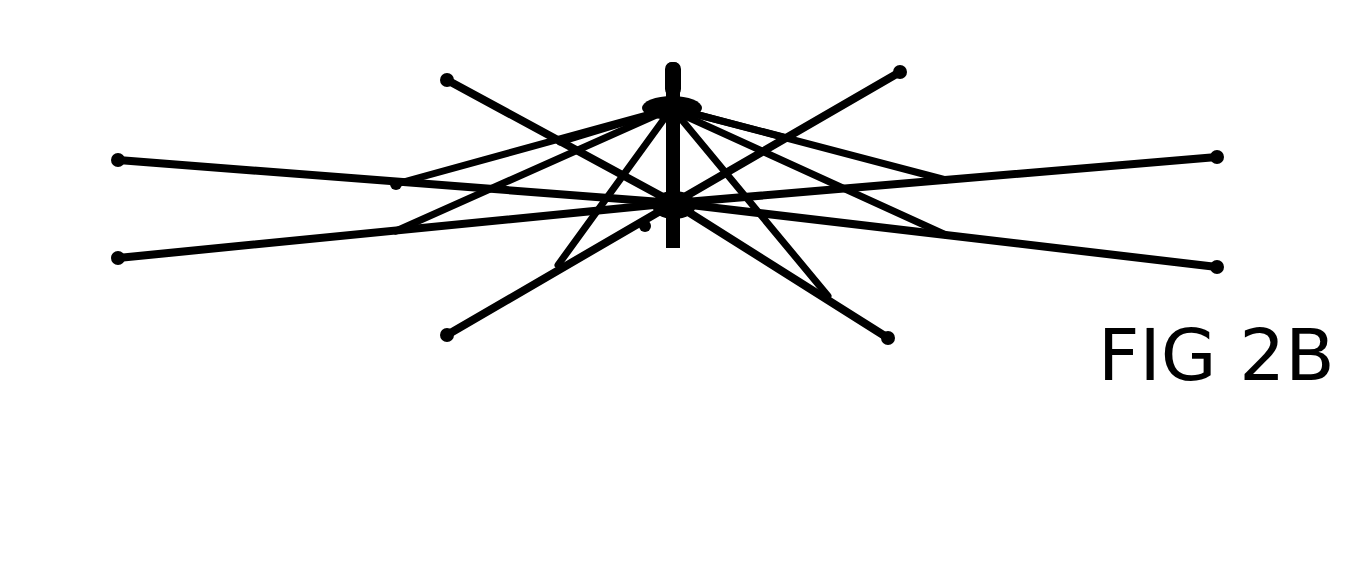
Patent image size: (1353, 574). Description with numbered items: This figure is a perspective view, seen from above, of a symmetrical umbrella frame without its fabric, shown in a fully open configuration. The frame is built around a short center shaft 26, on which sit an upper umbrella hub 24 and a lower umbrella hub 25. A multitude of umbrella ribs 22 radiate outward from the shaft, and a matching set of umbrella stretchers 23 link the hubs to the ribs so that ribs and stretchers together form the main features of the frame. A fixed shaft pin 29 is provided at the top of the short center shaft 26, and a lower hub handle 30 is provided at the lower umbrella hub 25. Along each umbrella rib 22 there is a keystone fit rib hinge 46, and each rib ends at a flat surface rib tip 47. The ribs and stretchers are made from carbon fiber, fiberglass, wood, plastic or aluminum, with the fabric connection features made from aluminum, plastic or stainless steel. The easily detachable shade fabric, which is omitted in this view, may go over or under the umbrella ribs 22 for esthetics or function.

The umbrella rib 22 is at (1013, 162).
The umbrella stretcher 23 is at (878, 150).
The upper umbrella hub 24 is at (697, 91).
The lower umbrella hub 25 is at (690, 240).
The short center shaft 26 is at (639, 236).
The fixed shaft pin 29 is at (658, 77).
The lower hub handle 30 is at (674, 252).
The keystone fit rib hinge 46 is at (390, 168).
The flat surface rib tip 47 is at (138, 150).